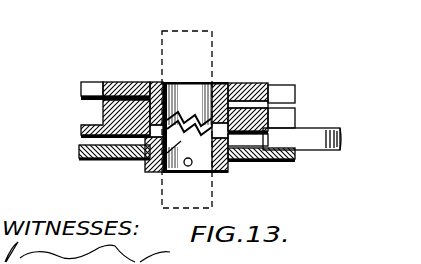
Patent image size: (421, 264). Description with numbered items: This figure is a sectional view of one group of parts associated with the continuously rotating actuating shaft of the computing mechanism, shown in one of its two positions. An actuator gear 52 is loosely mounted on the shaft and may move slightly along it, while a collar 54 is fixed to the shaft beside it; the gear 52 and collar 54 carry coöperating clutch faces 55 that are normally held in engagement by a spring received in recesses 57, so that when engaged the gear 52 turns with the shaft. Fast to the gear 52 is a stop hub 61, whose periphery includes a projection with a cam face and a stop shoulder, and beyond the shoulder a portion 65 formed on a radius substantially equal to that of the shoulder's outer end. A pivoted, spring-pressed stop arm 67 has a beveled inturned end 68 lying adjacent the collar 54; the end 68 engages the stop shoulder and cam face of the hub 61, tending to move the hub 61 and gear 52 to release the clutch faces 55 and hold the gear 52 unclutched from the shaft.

The actuator gear 52 is at (265, 84).
The collar 54 is at (318, 168).
The clutch face 55 is at (153, 81).
The recess 57 is at (227, 86).
The stop hub 61 is at (82, 125).
The portion beyond the stop shoulder 65 is at (80, 98).
The stop arm 67 is at (341, 139).
The inturned end 68 is at (296, 140).